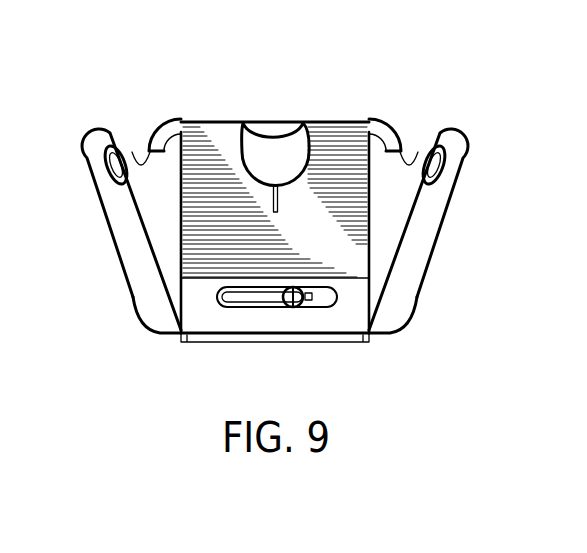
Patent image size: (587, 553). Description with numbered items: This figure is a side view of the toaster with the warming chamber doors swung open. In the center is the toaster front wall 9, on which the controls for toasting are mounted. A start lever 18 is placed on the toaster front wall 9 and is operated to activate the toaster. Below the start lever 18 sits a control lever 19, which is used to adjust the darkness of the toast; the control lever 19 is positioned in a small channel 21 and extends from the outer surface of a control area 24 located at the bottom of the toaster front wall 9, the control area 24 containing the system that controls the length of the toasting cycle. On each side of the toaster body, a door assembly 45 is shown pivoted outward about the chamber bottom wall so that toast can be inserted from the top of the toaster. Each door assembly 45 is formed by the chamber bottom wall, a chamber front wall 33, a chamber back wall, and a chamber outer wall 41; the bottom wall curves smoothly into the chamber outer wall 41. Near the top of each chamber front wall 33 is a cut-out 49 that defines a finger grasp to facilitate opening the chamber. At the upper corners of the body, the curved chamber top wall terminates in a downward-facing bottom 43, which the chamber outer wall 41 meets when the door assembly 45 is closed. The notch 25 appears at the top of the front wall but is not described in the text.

The toaster front wall 9 is at (223, 140).
The start lever 18 is at (321, 150).
The control lever 19 is at (312, 303).
The channel 21 is at (231, 300).
The control area 24 is at (222, 323).
The notch 25 is at (277, 135).
The chamber front wall 33 is at (138, 275).
The chamber outer wall 41 is at (171, 118).
The bottom of chamber top wall 43 is at (132, 152).
The door assembly 45 is at (133, 308).
The cut-outs 49 is at (122, 182).